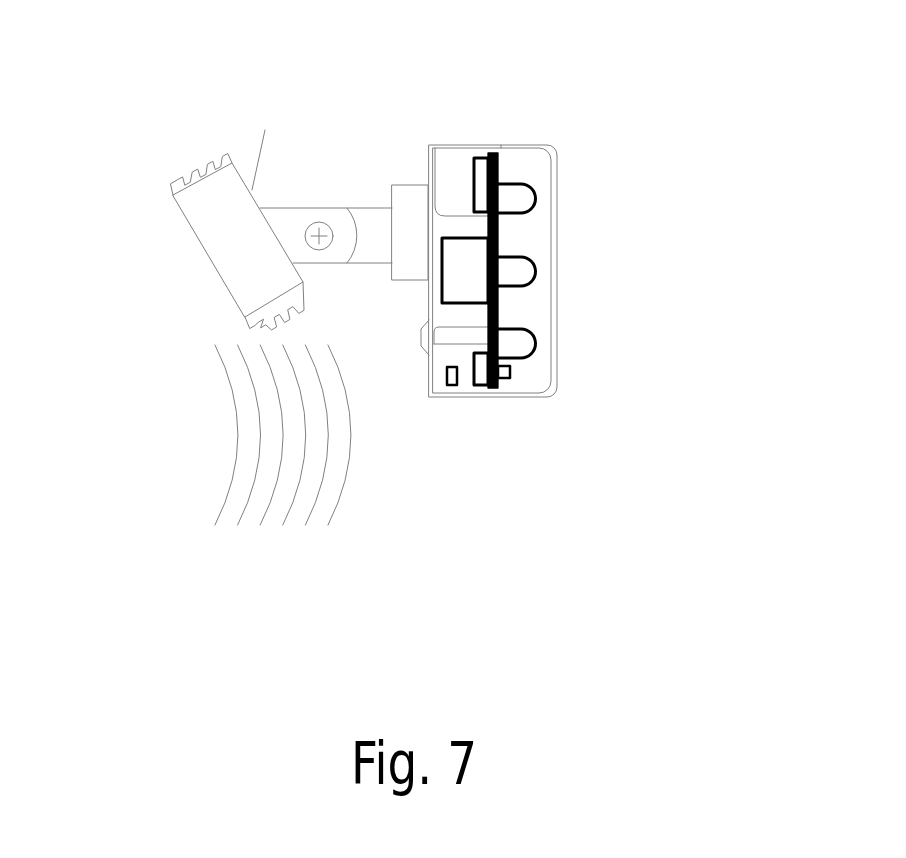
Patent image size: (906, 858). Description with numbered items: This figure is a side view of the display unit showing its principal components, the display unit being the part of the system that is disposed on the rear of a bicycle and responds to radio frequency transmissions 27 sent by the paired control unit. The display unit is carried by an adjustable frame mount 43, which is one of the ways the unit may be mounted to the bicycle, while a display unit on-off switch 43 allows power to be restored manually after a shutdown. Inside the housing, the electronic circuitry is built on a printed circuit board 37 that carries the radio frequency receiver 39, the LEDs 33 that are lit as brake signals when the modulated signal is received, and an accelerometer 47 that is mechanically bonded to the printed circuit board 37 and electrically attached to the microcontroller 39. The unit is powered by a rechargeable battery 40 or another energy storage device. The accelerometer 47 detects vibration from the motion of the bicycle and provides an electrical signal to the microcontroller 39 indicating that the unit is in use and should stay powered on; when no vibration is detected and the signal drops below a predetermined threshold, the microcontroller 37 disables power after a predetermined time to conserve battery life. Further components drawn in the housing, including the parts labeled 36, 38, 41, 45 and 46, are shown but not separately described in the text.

The radio frequency transmissions 27 is at (340, 482).
The LEDs 33 is at (536, 344).
The housing inner wall 36 is at (601, 270).
The printed circuit board 37 is at (601, 233).
The housing 38 is at (523, 215).
The radio frequency receiver 39 is at (416, 122).
The rechargeable battery 40 is at (555, 422).
The processor 41 is at (408, 190).
The adjustable frame mount 43 is at (392, 194).
The motor 45 is at (174, 224).
The electronic component 46 is at (509, 452).
The accelerometer 47 is at (592, 405).